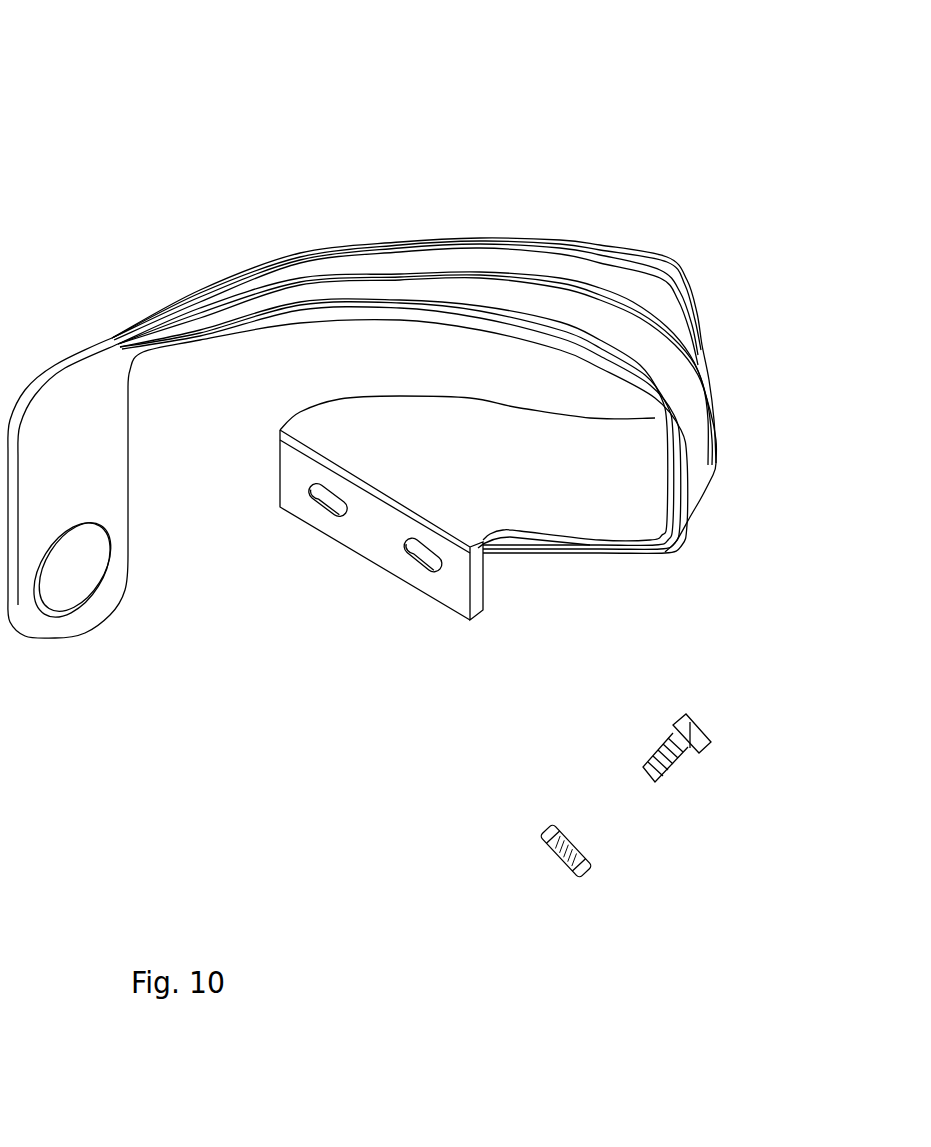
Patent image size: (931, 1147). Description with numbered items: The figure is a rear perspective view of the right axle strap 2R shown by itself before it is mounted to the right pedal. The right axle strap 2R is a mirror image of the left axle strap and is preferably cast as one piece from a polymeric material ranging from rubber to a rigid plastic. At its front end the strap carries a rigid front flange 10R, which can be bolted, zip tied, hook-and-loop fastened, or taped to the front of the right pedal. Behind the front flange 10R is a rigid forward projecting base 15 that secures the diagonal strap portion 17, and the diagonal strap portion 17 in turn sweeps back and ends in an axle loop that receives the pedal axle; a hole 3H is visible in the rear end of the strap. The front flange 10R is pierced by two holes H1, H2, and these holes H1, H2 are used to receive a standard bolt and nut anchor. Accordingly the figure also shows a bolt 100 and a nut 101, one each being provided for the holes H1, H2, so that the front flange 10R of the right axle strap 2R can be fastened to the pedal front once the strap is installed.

The right axle strap 2R is at (465, 240).
The diagonal strap portion 17 is at (620, 282).
The forward projecting base 15 is at (519, 478).
The hole 3H is at (37, 578).
The hole H2 is at (333, 508).
The hole H1 is at (430, 563).
The front flange 10R is at (370, 527).
The bolt 100 is at (700, 730).
The nut 101 is at (543, 837).